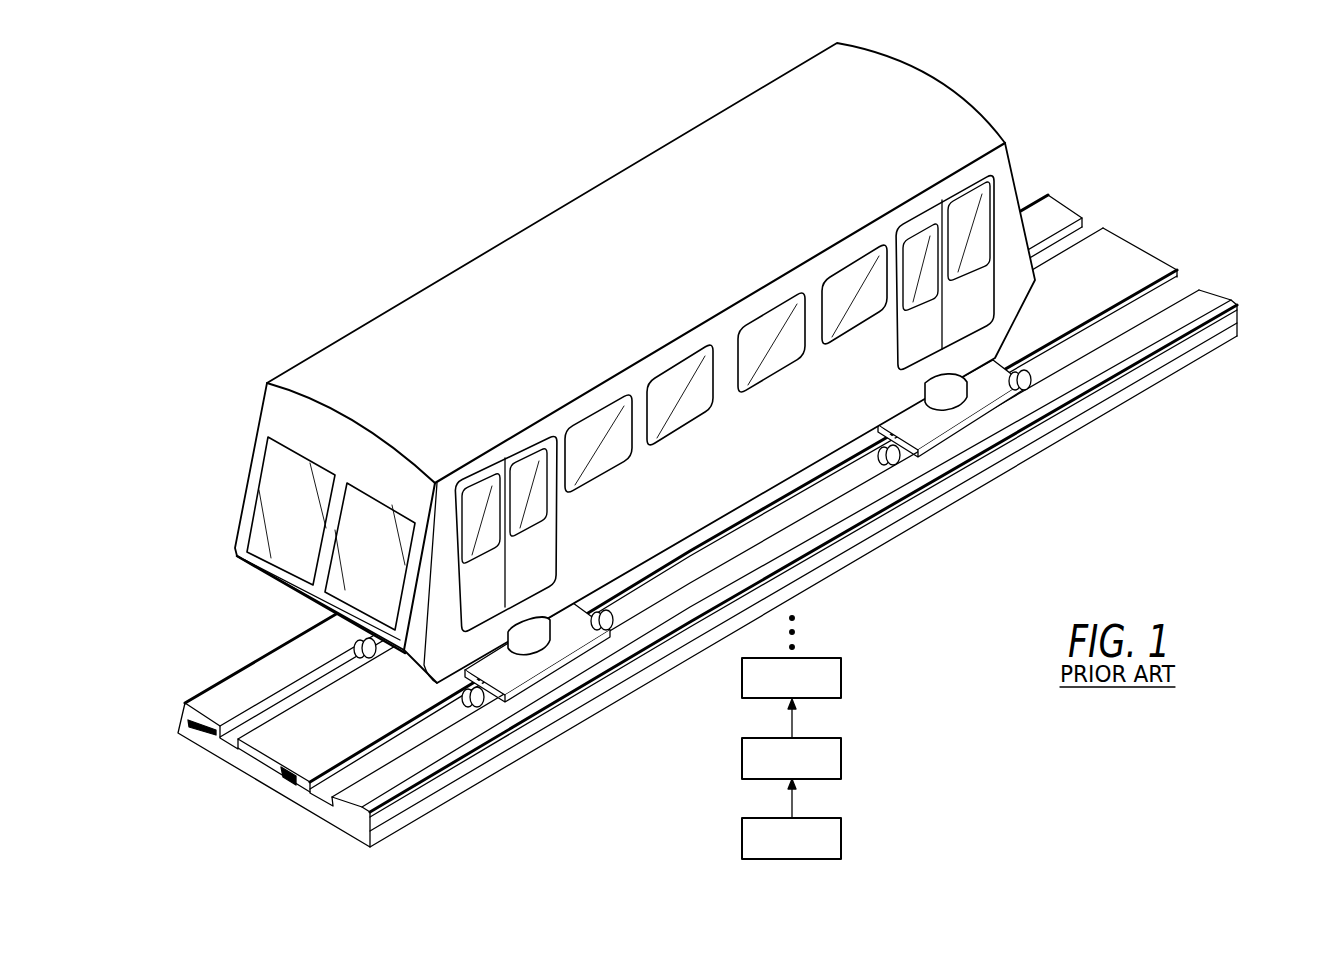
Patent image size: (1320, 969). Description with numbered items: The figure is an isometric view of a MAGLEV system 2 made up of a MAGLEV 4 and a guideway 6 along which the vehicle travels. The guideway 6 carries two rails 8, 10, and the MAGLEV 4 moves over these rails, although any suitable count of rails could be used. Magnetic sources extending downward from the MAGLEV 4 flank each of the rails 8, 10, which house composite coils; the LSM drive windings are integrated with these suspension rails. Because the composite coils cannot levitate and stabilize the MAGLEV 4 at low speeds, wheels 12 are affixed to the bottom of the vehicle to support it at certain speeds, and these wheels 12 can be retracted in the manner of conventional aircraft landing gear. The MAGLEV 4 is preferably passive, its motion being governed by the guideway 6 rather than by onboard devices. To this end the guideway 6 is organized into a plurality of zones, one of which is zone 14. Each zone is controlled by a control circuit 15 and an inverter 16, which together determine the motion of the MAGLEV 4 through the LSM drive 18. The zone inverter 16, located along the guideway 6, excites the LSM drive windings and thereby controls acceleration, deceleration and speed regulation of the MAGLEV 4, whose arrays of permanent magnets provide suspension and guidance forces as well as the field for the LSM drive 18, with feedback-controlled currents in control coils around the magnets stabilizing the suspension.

The MAGLEV system 2 is at (635, 372).
The MAGLEV 4 is at (333, 358).
The guideway 6 is at (1148, 231).
The rail 8 is at (1058, 218).
The rail 10 is at (1202, 298).
The wheels 12 is at (356, 650).
The zone 14 is at (875, 578).
The control circuit 15 is at (843, 838).
The inverter 16 is at (843, 757).
The LSM drive 18 is at (843, 679).